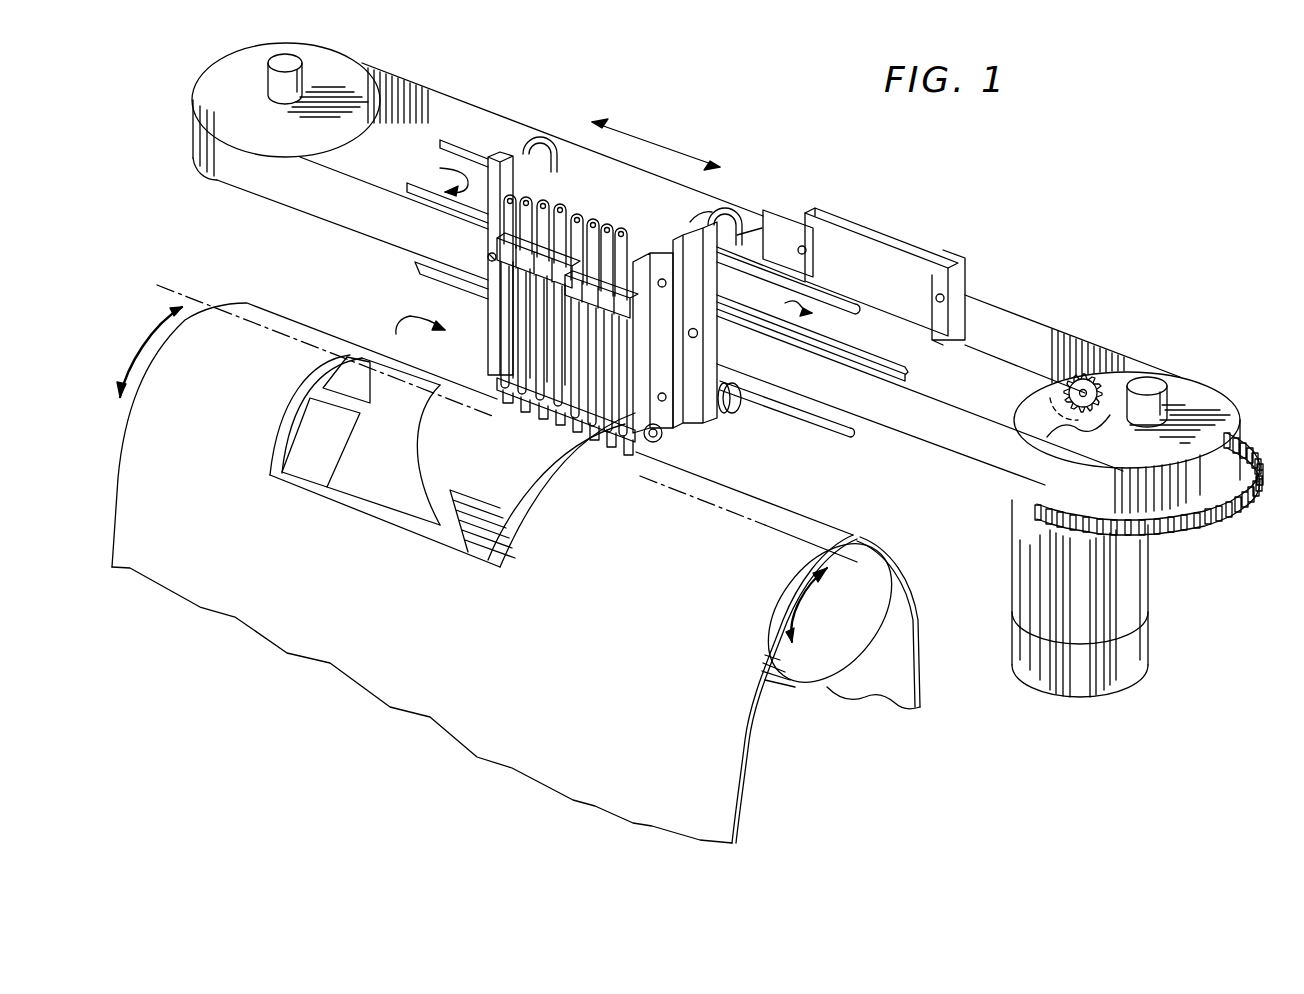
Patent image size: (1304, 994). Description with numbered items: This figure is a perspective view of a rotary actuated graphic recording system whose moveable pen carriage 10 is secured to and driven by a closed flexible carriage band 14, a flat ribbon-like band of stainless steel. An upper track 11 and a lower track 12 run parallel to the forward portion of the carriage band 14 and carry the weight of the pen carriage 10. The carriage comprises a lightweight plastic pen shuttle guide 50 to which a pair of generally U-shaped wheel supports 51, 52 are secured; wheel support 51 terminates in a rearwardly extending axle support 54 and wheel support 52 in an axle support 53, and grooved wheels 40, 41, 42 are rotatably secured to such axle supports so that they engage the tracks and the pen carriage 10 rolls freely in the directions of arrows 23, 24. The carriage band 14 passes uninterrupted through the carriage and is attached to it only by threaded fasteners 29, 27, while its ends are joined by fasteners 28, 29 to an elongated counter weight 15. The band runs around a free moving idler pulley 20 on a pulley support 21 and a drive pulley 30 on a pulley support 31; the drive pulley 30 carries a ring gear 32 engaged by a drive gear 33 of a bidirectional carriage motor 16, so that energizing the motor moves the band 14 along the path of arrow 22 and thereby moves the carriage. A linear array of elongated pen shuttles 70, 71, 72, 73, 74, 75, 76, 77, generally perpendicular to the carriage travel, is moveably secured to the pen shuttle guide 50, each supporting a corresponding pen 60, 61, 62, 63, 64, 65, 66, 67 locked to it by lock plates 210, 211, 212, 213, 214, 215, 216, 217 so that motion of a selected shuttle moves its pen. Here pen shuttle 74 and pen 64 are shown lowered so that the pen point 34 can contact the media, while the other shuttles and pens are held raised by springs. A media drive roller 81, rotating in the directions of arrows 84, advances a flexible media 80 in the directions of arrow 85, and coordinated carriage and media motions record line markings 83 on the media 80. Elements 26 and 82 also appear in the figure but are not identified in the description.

The pen carriage 10 is at (420, 320).
The upper track 11 is at (768, 270).
The lower track 12 is at (826, 430).
The carriage band 14 is at (1035, 332).
The counter weight 15 is at (906, 242).
The carriage motor 16 is at (1135, 590).
The idler pulley 20 is at (216, 74).
The pulley support 21 is at (305, 72).
The arrow 22 is at (663, 146).
The arrow 23 is at (812, 313).
The arrow 24 is at (440, 168).
The mounting screw 26 is at (698, 334).
The threaded fastener 27 is at (486, 256).
The fastener 28 is at (808, 250).
The fastener 29 is at (946, 300).
The drive pulley 30 is at (1143, 442).
The pulley support 31 is at (1172, 390).
The ring gear 32 is at (1250, 475).
The drive gear 33 is at (1096, 378).
The pen point 34 is at (592, 428).
The grooved wheel 40 is at (540, 141).
The grooved wheel 41 is at (755, 235).
The grooved wheel 42 is at (741, 404).
The pen shuttle guide 50 is at (735, 214).
The wheel support 51 is at (695, 418).
The wheel support 52 is at (488, 166).
The axle support 53 is at (513, 152).
The axle support 54 is at (760, 228).
The pen 60 is at (503, 372).
The pen 61 is at (503, 384).
The pen 62 is at (521, 392).
The pen 63 is at (538, 400).
The pen 64 is at (556, 408).
The pen 65 is at (574, 420).
The pen 66 is at (608, 436).
The pen 67 is at (625, 440).
The pen shuttle 70 is at (512, 196).
The pen shuttle 71 is at (529, 198).
The pen shuttle 72 is at (547, 202).
The pen shuttle 73 is at (565, 207).
The pen shuttle 74 is at (594, 222).
The pen shuttle 75 is at (610, 226).
The pen shuttle 76 is at (715, 212).
The pen shuttle 77 is at (668, 262).
The media 80 is at (732, 752).
The media drive roller 81 is at (895, 597).
The ribbon 82 is at (512, 533).
The line markings 83 is at (296, 402).
The arrows 84 is at (800, 606).
The arrow 85 is at (142, 350).
The lock plate 210 is at (506, 402).
The lock plate 211 is at (524, 410).
The lock plate 212 is at (542, 418).
The lock plate 213 is at (560, 424).
The lock plate 214 is at (577, 432).
The lock plate 215 is at (594, 440).
The lock plate 216 is at (611, 447).
The lock plate 217 is at (629, 455).